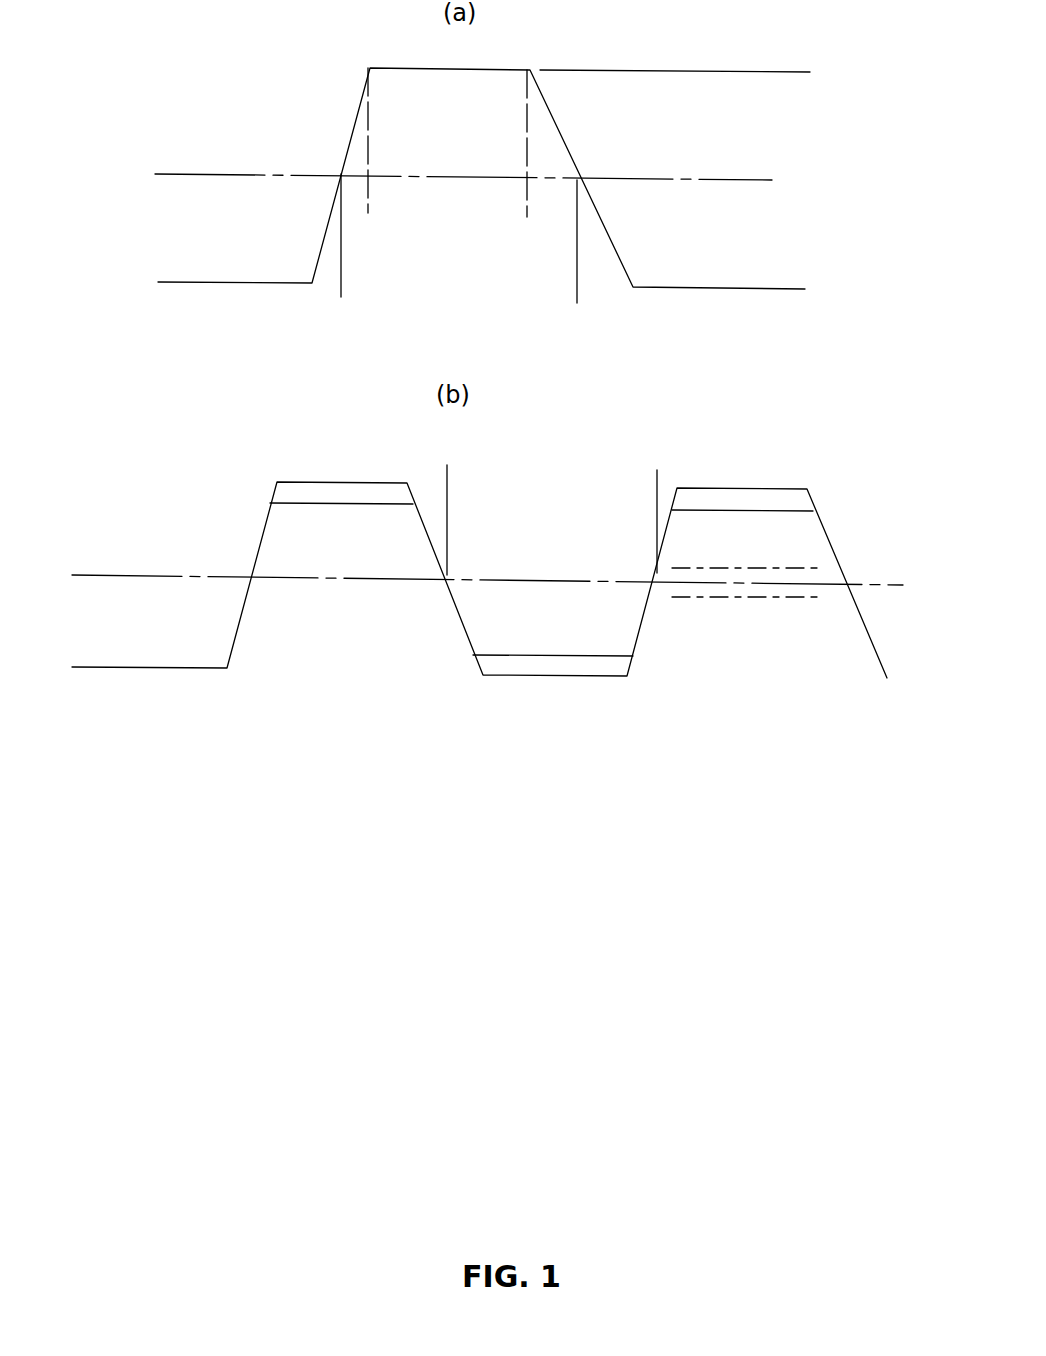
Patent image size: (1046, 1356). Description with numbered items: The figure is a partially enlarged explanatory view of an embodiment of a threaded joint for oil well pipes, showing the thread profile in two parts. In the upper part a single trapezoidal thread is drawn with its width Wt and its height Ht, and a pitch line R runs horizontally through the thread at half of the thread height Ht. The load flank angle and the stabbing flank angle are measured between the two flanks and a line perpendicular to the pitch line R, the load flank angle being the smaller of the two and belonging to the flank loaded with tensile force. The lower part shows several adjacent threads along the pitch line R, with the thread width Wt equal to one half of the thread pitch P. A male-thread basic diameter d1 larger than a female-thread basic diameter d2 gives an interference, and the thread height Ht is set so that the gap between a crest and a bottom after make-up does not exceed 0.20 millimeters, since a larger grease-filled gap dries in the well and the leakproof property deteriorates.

The pitch line R is at (225, 177).
The thread width Wt is at (577, 288).
The thread height Ht is at (787, 289).
The thread pitch P is at (129, 566).
The crest-to-bottom gap limit 0.20 is at (343, 531).
The male-thread basic diameter d1 is at (687, 597).
The female-thread basic diameter d2 is at (795, 568).